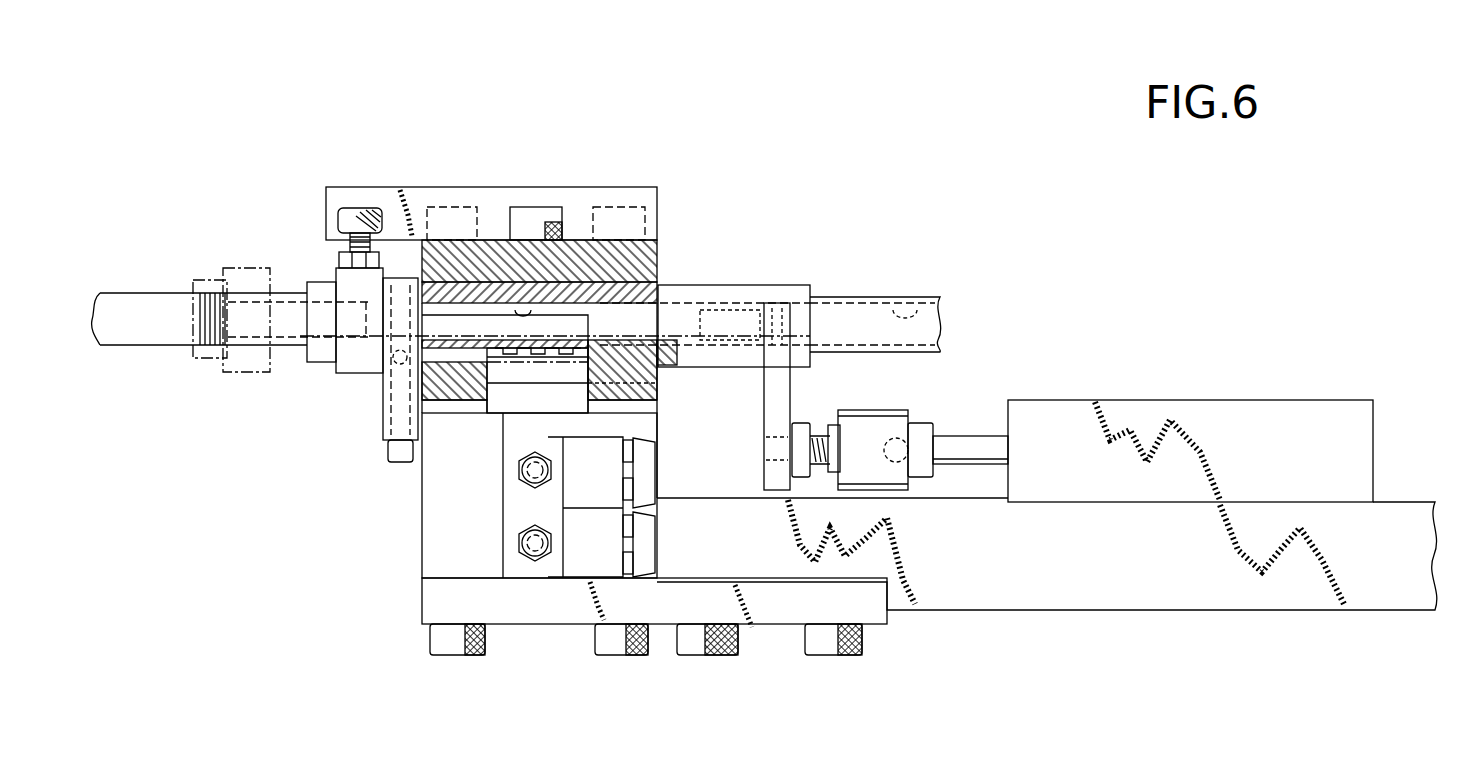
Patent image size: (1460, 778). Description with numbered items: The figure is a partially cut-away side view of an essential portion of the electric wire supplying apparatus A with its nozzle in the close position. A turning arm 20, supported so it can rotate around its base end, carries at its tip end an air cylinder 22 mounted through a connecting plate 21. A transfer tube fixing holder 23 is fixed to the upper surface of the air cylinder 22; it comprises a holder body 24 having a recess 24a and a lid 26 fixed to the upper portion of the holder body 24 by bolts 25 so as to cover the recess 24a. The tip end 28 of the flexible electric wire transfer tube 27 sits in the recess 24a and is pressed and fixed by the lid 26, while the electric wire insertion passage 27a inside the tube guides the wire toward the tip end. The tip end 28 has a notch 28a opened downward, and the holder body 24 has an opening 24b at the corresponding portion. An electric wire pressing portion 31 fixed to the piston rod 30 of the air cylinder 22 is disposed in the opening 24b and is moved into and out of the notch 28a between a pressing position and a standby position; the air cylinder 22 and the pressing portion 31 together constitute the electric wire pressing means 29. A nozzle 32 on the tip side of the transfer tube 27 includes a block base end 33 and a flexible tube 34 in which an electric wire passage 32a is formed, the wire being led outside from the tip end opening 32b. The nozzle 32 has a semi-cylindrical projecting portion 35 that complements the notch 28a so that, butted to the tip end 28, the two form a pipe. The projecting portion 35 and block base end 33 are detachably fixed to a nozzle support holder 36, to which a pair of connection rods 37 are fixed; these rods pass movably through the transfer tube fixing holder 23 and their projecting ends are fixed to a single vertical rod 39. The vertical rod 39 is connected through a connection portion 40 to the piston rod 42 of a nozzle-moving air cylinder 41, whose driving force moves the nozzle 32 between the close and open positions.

The electric wire supplying apparatus A is at (232, 172).
The turning arm 20 is at (1108, 590).
The connecting plate 21 is at (760, 610).
The air cylinder 22 is at (487, 555).
The transfer tube fixing holder 23 is at (735, 100).
The holder body 24 is at (663, 330).
The recess 24a is at (600, 392).
The opening 24b is at (615, 400).
The bolts 25 is at (452, 210).
The lid 26 is at (605, 258).
The electric wire transfer tube 27 is at (862, 272).
The electric wire insertion passage 27a is at (910, 305).
The tip end 28 is at (760, 293).
The notch 28a is at (523, 308).
The electric wire pressing means 29 is at (548, 420).
The piston rod 30 is at (512, 382).
The electric wire pressing portion 31 is at (488, 382).
The nozzle 32 is at (322, 268).
The electric wire passage 32a is at (288, 312).
The tip end opening 32b is at (197, 303).
The block base end 33 is at (357, 360).
The flexible tube 34 is at (281, 350).
The projecting portion 35 is at (441, 392).
The nozzle support holder 36 is at (380, 407).
The connection rods 37 is at (716, 336).
The vertical rod 39 is at (777, 400).
The connection portion 40 is at (872, 448).
The nozzle-moving air cylinder 41 is at (1145, 420).
The piston rod 42 is at (965, 445).